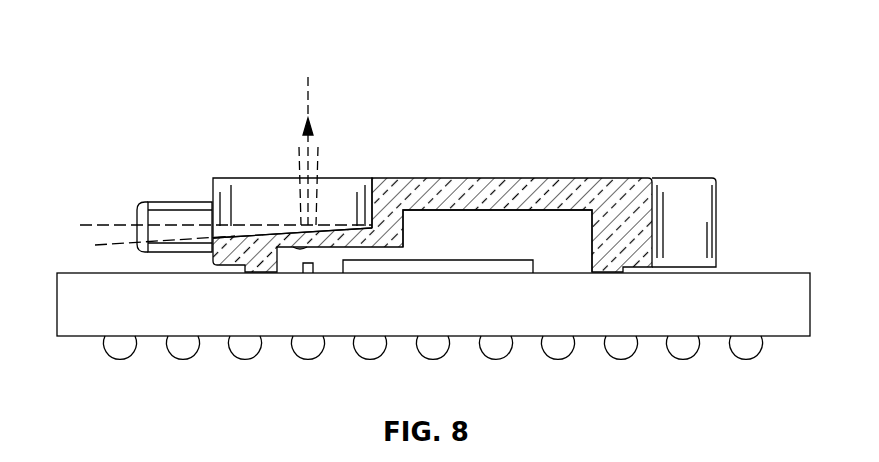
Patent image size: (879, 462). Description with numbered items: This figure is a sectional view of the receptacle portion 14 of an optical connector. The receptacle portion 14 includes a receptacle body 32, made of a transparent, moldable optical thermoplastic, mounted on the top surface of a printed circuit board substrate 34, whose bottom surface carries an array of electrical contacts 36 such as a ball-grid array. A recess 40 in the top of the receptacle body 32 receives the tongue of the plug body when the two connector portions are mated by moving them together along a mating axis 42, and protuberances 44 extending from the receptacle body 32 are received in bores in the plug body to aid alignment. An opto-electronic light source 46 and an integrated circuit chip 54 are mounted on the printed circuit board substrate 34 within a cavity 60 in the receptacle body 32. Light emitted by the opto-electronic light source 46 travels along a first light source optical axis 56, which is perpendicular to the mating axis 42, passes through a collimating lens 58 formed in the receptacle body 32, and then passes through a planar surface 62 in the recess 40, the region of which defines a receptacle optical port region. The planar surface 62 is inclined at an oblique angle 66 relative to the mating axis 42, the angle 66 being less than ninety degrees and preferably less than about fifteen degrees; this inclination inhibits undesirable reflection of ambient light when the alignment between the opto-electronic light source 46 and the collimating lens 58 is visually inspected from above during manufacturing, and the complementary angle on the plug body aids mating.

The receptacle portion 14 is at (478, 70).
The receptacle body 32 is at (514, 178).
The printed circuit board substrate 34 is at (770, 272).
The electrical contacts 36 is at (120, 362).
The recess 40 is at (269, 218).
The mating axis 42 is at (92, 222).
The protuberances 44 is at (173, 203).
The opto-electronic light source 46 is at (305, 273).
The integrated circuit chip 54 is at (520, 274).
The first light source optical axis 56 is at (311, 103).
The collimating lens 58 is at (300, 248).
The cavity 60 is at (547, 247).
The planar surface 62 is at (282, 232).
The angle 66 is at (113, 228).